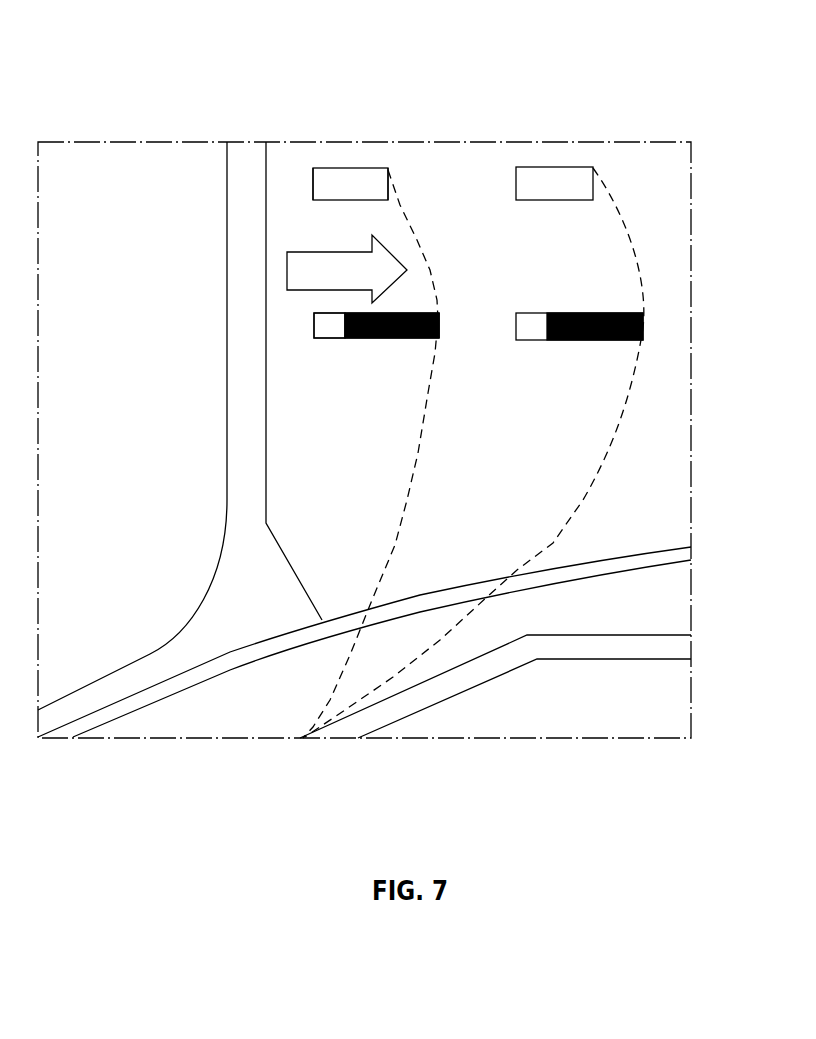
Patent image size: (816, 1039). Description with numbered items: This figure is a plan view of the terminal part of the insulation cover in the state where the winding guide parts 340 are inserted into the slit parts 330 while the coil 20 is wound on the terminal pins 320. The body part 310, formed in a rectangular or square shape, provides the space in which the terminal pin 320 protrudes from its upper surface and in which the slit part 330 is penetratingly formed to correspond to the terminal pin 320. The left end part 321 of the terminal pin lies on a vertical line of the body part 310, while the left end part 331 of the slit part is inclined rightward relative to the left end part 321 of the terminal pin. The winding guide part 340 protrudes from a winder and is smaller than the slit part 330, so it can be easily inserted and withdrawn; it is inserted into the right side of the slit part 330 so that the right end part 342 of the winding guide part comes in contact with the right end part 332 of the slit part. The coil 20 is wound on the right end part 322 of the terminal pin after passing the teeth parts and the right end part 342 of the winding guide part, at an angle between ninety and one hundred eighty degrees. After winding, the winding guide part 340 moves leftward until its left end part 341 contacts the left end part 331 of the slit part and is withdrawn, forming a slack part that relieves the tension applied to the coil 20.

The coil 20 is at (573, 513).
The body part 310 is at (313, 512).
The terminal pin 320 is at (343, 178).
The left end part of the terminal pin 321 is at (313, 183).
The right end part of the terminal pin 322 is at (388, 183).
The slit part 330 is at (330, 322).
The left end part of the slit part 331 is at (314, 325).
The right end part of the slit part 332 is at (440, 325).
The winding guide part 340 is at (390, 338).
The left end part of the winding guide part 341 is at (345, 338).
The right end part of the winding guide part 342 is at (437, 313).